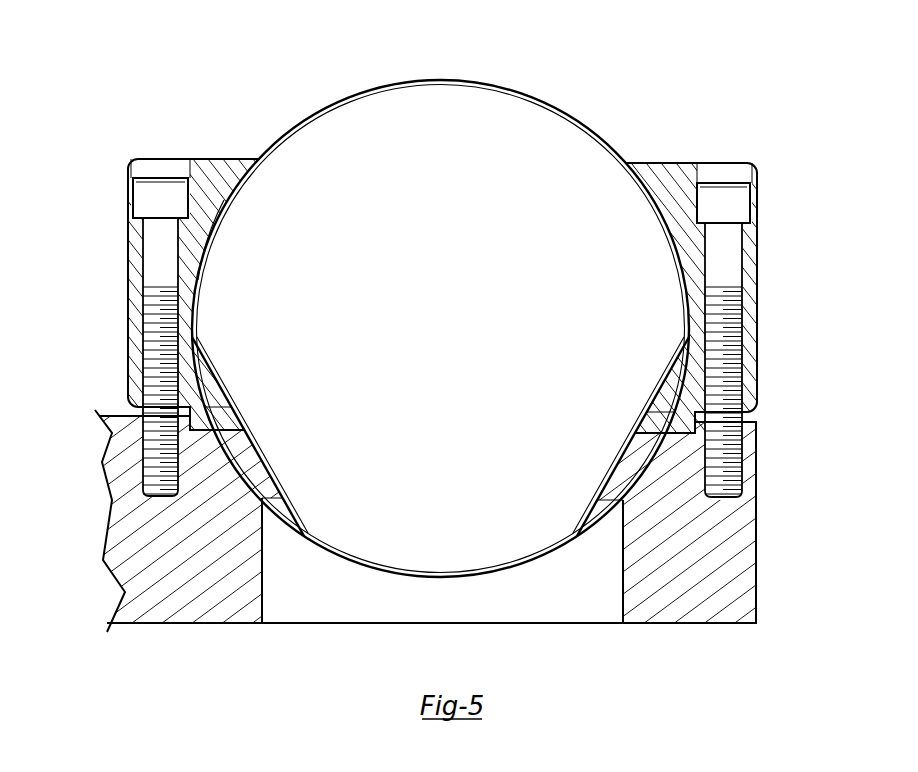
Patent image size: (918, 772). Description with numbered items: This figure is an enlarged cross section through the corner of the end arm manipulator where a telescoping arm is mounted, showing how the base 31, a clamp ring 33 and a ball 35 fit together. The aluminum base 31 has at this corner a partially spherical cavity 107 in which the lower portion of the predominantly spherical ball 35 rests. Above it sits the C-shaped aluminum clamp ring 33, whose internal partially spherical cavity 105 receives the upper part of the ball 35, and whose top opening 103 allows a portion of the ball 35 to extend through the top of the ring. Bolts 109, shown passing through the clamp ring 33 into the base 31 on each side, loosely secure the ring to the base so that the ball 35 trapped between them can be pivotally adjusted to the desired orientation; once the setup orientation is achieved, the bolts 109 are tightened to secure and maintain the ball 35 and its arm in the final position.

The base 31 is at (683, 597).
The clamp ring 33 is at (665, 180).
The ball 35 is at (518, 88).
The top opening 103 is at (252, 150).
The internal partially spherical cavity 105 is at (212, 223).
The partially spherical cavity 107 is at (242, 471).
The bolt 109 is at (160, 268).